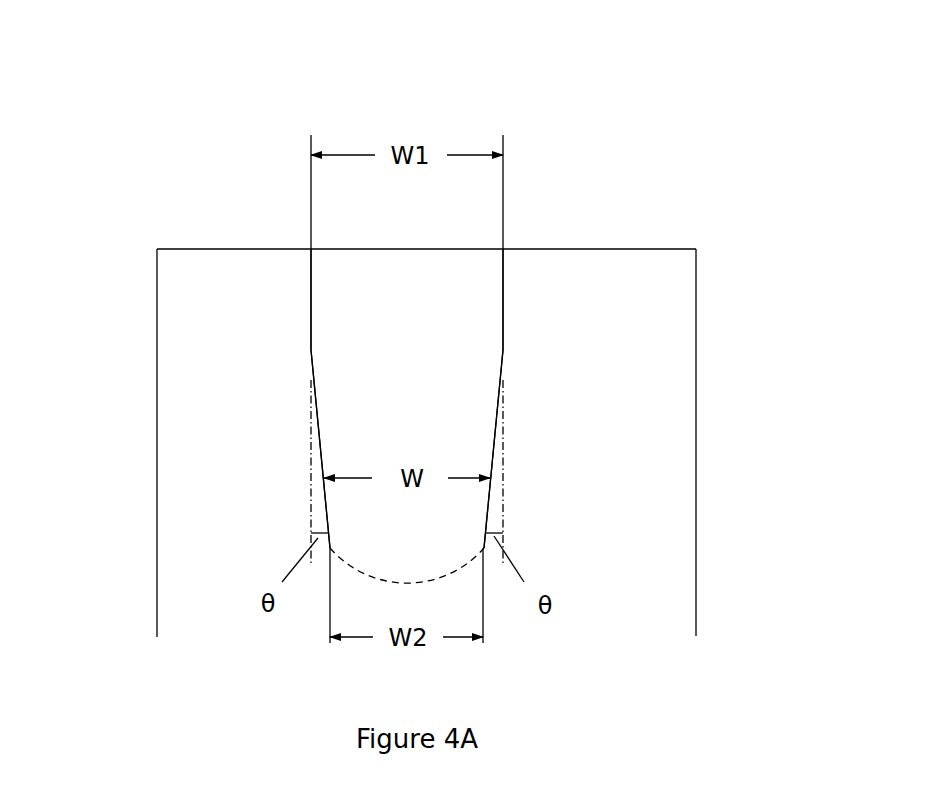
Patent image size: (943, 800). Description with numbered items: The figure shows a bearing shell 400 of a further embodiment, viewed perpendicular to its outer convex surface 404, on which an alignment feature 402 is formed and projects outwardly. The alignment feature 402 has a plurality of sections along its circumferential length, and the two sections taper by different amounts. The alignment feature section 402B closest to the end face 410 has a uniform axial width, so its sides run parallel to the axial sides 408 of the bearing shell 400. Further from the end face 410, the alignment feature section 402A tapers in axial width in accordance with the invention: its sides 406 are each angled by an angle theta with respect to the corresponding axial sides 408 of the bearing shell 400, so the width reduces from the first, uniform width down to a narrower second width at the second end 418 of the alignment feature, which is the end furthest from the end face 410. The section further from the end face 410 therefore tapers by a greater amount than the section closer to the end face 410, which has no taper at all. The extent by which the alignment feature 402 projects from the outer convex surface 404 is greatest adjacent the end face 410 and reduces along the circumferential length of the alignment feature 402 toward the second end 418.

The bearing shell 400 is at (140, 83).
The alignment feature 402 is at (384, 432).
The alignment feature section furthest from the end face 402A is at (320, 430).
The alignment feature section closest to the end face 402B is at (311, 320).
The outer convex surface 404 is at (580, 393).
The sides of the alignment feature 406 is at (323, 505).
The axial sides of the bearing shell 408 is at (157, 273).
The end face 410 is at (612, 249).
The second end of the alignment feature 418 is at (368, 573).